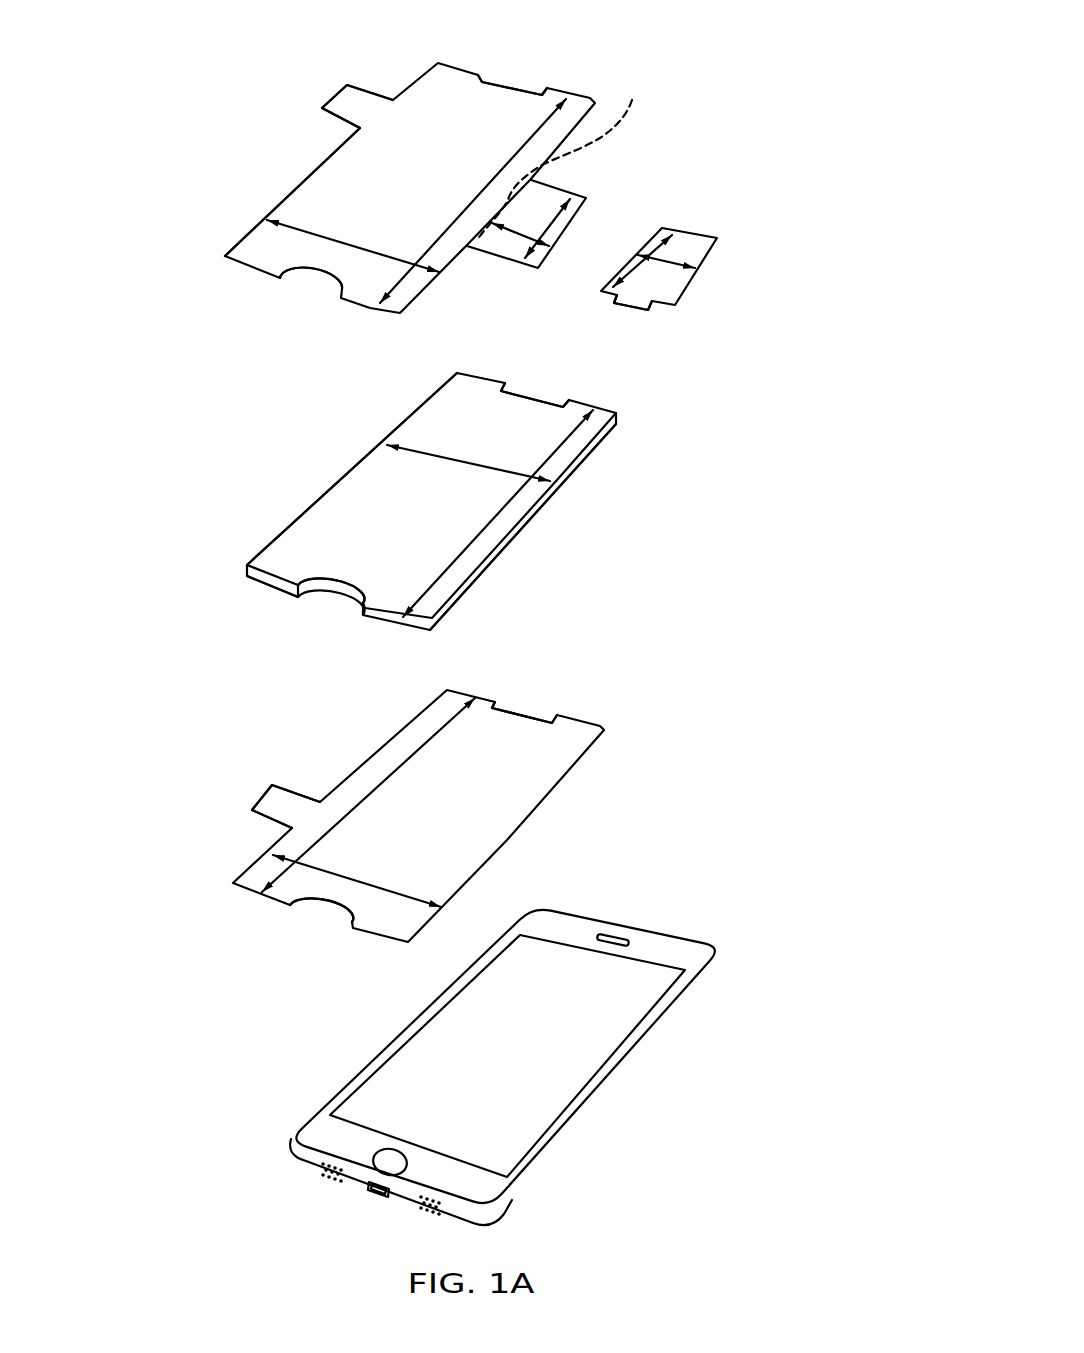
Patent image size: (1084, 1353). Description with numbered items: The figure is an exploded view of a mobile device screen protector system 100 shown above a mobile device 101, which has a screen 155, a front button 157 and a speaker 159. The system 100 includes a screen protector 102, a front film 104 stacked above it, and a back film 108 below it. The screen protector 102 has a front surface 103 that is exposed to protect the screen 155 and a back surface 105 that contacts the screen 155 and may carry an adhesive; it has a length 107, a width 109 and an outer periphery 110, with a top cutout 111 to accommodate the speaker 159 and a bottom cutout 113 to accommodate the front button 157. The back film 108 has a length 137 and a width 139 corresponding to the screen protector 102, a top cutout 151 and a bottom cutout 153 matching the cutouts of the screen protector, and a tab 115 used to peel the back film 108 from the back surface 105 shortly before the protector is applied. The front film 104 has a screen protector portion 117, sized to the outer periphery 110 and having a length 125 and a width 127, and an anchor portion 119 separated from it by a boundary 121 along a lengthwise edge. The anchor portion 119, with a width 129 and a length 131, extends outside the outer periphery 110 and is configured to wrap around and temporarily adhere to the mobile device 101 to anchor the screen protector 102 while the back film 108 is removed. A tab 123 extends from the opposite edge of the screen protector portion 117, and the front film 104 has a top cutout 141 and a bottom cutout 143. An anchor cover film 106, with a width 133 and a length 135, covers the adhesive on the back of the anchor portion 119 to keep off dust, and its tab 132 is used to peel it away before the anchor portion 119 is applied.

The mobile device screen protector system 100 is at (730, 79).
The mobile device 101 is at (506, 1049).
The screen protector 102 is at (587, 460).
The front surface 103 is at (273, 552).
The front film 104 is at (563, 90).
The back surface 105 is at (263, 590).
The anchor cover film 106 is at (703, 233).
The length 107 is at (440, 570).
The back film 108 is at (583, 720).
The width 109 is at (447, 462).
The outer periphery 110 is at (527, 518).
The top cutout 111 is at (517, 392).
The bottom cutout 113 is at (338, 597).
The tab 115 is at (260, 798).
The screen protector portion 117 is at (254, 240).
The anchor portion 119 is at (538, 195).
The boundary 121 is at (562, 156).
The tab 123 is at (338, 88).
The length 125 is at (470, 200).
The width 127 is at (330, 240).
The width 129 is at (517, 237).
The length 131 is at (557, 223).
The tab 132 is at (638, 309).
The width 133 is at (678, 255).
The length 135 is at (657, 238).
The length 137 is at (395, 775).
The width 139 is at (375, 887).
The top cutout 141 is at (502, 86).
The bottom cutout 143 is at (310, 272).
The top cutout 151 is at (508, 708).
The bottom cutout 153 is at (327, 902).
The screen 155 is at (600, 1028).
The front button 157 is at (393, 1155).
The speaker 159 is at (613, 937).